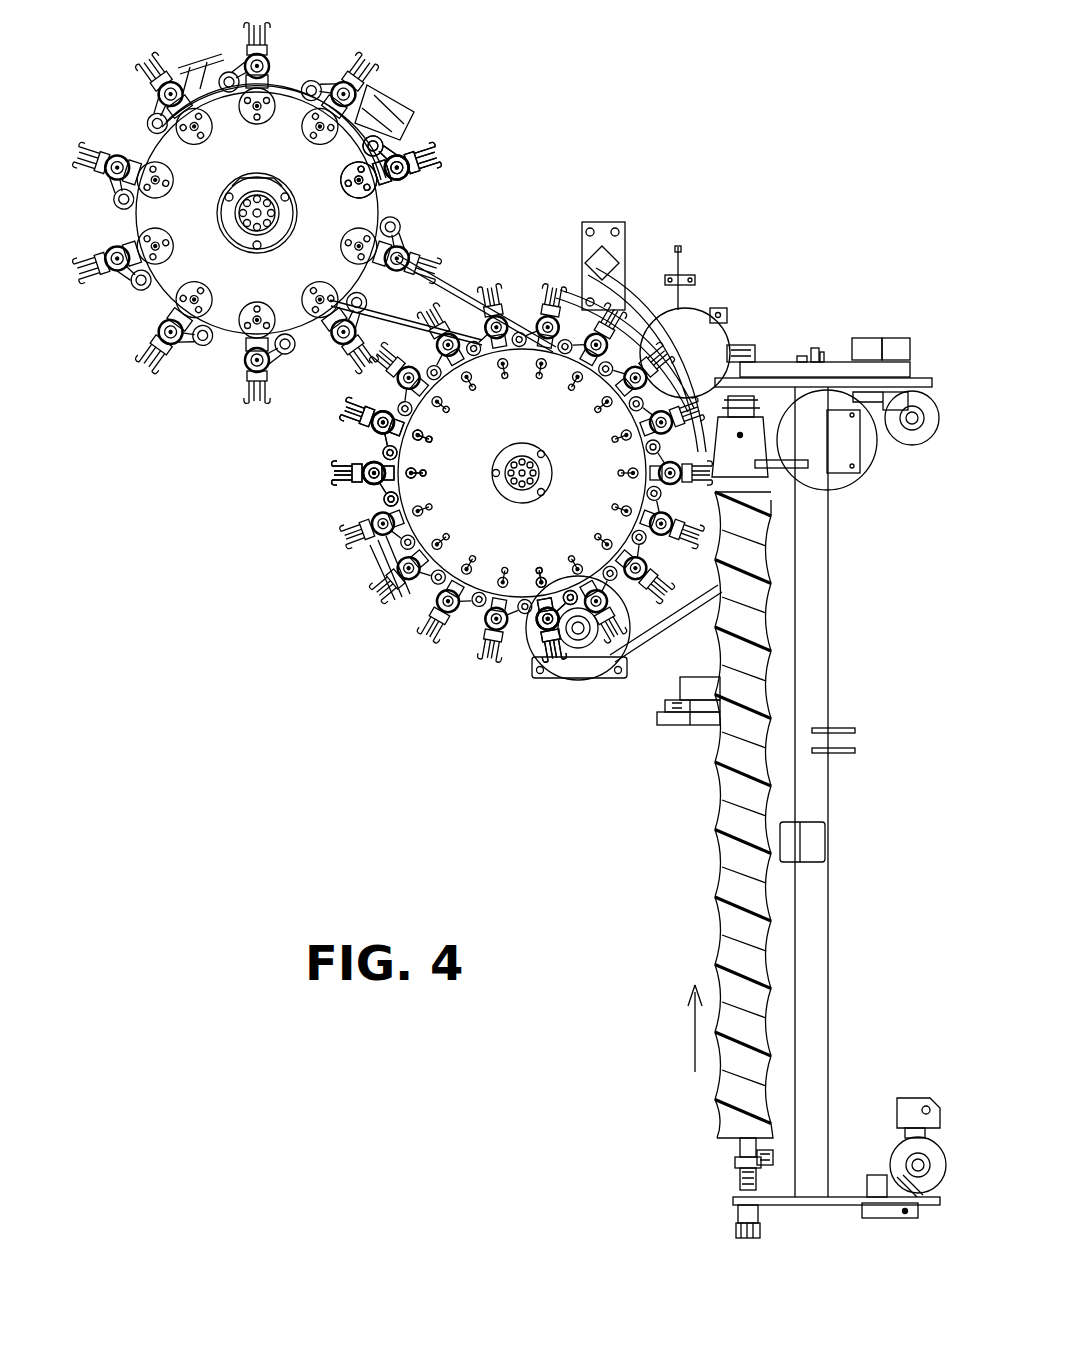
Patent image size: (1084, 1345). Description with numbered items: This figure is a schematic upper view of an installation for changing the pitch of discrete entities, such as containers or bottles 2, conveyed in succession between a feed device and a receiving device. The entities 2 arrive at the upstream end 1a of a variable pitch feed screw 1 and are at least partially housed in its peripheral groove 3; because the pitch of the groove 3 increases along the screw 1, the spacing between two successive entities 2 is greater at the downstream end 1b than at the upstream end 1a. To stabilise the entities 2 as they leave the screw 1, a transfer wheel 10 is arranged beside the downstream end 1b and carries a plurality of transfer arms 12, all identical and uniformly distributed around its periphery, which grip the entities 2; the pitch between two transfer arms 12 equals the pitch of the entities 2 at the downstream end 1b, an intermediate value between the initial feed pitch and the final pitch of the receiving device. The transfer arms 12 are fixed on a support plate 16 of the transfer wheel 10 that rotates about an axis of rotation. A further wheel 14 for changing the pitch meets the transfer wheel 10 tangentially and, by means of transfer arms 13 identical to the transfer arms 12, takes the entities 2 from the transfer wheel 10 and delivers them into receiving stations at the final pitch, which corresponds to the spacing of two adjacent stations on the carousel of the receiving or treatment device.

The variable pitch feed screw 1 is at (773, 849).
The upstream end of the feed screw 1a is at (730, 1138).
The downstream end of the feed screw 1b is at (760, 466).
The container or bottle 2 is at (748, 540).
The peripheral groove 3 is at (722, 880).
The transfer wheel 10 is at (482, 520).
The transfer arms 12 is at (347, 495).
The transfer arms of the pitch-changing wheel 13 is at (436, 122).
The wheel for changing the pitch 14 is at (272, 135).
The support plate 16 is at (403, 538).